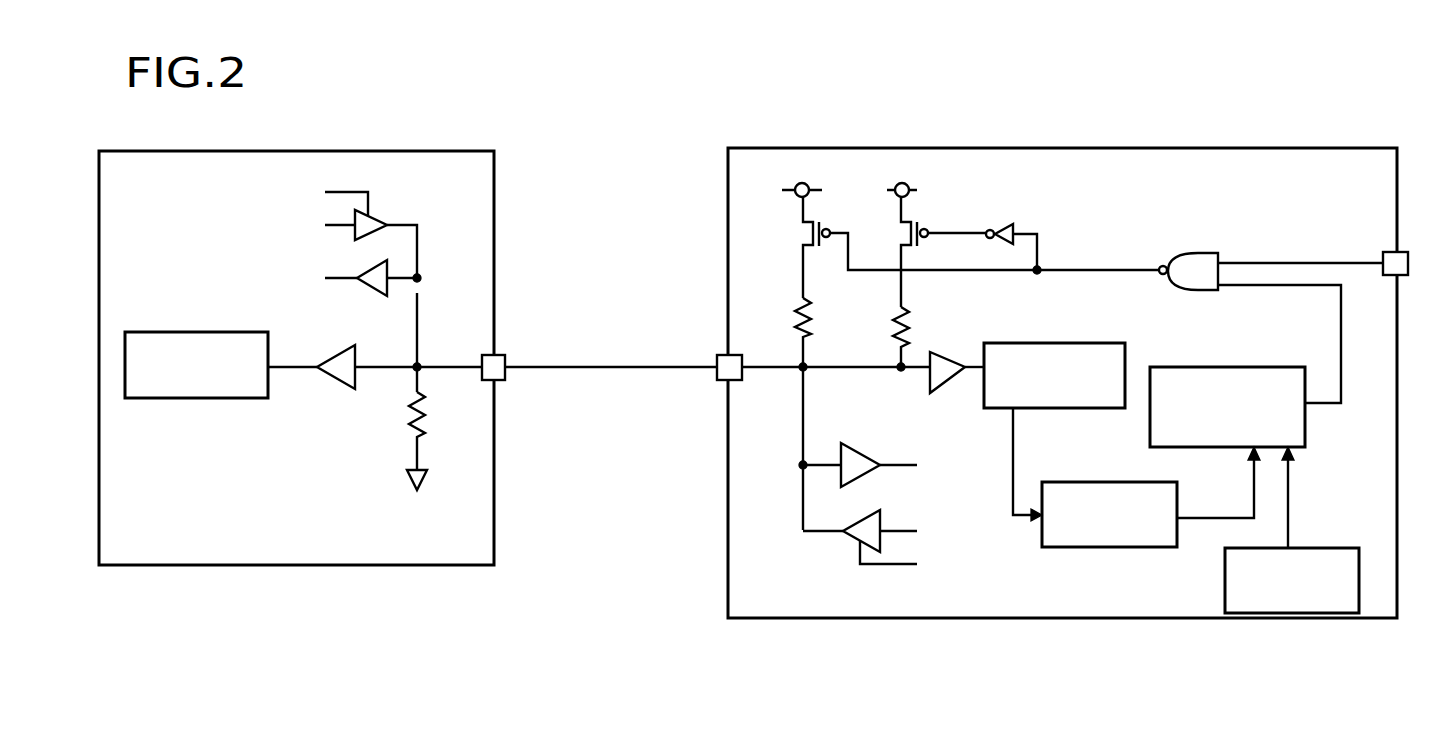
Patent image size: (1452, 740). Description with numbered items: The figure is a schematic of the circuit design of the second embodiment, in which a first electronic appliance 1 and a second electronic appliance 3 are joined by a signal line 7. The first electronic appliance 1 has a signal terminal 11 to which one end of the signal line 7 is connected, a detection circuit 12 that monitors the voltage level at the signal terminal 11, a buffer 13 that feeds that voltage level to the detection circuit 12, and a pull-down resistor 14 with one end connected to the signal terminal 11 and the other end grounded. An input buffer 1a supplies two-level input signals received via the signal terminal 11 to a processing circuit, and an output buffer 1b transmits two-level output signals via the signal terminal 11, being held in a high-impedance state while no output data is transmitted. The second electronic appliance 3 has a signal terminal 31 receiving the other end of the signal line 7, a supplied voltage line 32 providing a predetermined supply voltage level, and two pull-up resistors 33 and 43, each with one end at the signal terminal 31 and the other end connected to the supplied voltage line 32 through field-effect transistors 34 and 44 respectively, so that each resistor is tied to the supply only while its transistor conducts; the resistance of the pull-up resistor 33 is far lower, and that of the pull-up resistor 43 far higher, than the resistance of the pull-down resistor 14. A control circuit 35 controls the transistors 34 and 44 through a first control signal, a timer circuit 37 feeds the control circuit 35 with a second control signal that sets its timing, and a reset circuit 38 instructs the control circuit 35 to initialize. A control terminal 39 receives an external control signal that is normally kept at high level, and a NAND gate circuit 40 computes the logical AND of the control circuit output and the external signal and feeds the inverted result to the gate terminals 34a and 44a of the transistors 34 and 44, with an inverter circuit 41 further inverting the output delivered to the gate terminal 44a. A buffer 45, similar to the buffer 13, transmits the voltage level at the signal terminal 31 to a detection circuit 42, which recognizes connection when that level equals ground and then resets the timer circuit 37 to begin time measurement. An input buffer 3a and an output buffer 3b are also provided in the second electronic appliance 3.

The first electronic appliance 1 is at (160, 566).
The input buffer 1a is at (373, 268).
The output buffer 1b is at (370, 218).
The second electronic appliance 3 is at (861, 620).
The input buffer 3a is at (858, 453).
The output buffer 3b is at (856, 540).
The signal line 7 is at (613, 369).
The signal terminal 11 is at (505, 358).
The detection circuit 12 is at (248, 332).
The buffer 13 is at (338, 382).
The pull-down resistor 14 is at (407, 412).
The signal terminal 31 is at (720, 353).
The supplied voltage line 32 is at (786, 187).
The pull-up resistor 33 is at (812, 322).
The field-effect transistor 34 is at (801, 235).
The gate terminal 34a is at (829, 236).
The control circuit 35 is at (1206, 366).
The timer circuit 37 is at (1118, 548).
The reset circuit 38 is at (1332, 546).
The control terminal 39 is at (1410, 268).
The NAND gate circuit 40 is at (1197, 250).
The inverter circuit 41 is at (1005, 228).
The detection circuit 42 is at (1070, 342).
The pull-up resistor 43 is at (915, 330).
The field-effect transistor 44 is at (903, 237).
The gate terminal 44a is at (927, 237).
The buffer 45 is at (948, 386).